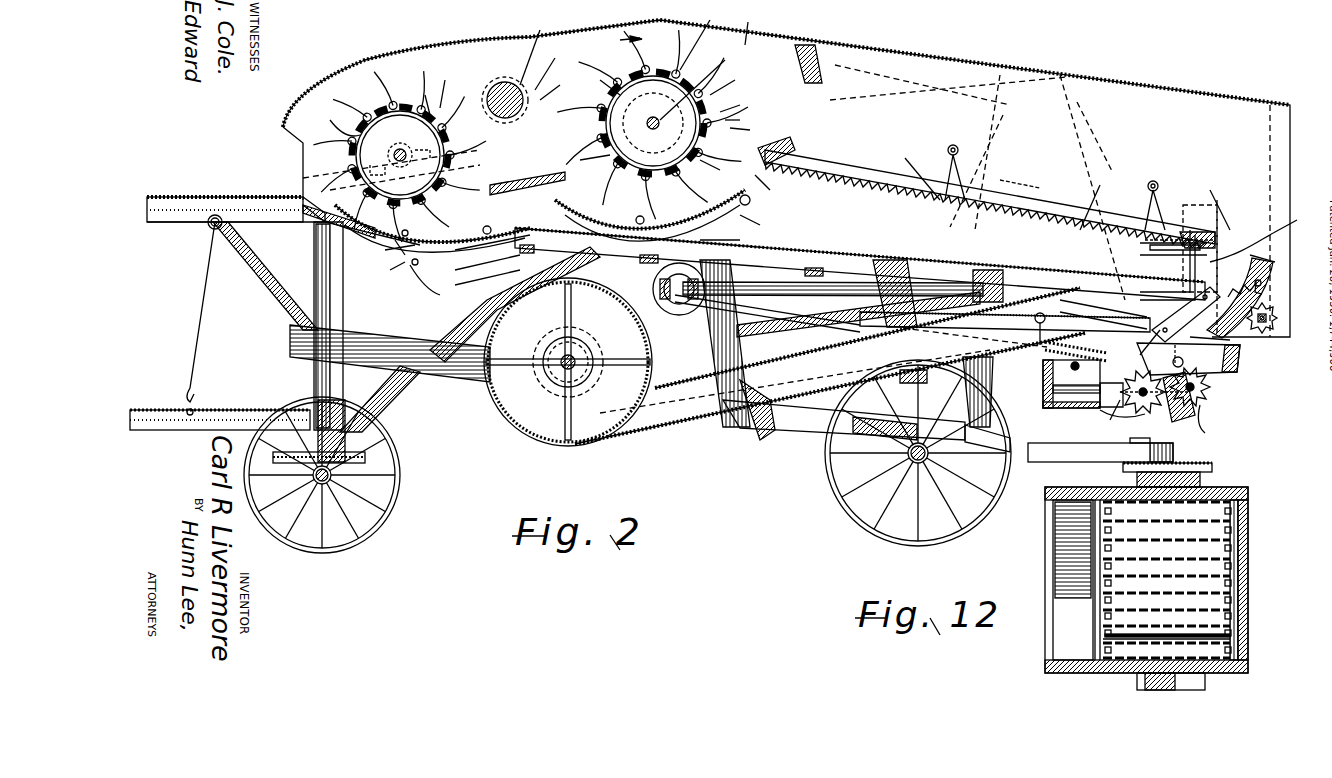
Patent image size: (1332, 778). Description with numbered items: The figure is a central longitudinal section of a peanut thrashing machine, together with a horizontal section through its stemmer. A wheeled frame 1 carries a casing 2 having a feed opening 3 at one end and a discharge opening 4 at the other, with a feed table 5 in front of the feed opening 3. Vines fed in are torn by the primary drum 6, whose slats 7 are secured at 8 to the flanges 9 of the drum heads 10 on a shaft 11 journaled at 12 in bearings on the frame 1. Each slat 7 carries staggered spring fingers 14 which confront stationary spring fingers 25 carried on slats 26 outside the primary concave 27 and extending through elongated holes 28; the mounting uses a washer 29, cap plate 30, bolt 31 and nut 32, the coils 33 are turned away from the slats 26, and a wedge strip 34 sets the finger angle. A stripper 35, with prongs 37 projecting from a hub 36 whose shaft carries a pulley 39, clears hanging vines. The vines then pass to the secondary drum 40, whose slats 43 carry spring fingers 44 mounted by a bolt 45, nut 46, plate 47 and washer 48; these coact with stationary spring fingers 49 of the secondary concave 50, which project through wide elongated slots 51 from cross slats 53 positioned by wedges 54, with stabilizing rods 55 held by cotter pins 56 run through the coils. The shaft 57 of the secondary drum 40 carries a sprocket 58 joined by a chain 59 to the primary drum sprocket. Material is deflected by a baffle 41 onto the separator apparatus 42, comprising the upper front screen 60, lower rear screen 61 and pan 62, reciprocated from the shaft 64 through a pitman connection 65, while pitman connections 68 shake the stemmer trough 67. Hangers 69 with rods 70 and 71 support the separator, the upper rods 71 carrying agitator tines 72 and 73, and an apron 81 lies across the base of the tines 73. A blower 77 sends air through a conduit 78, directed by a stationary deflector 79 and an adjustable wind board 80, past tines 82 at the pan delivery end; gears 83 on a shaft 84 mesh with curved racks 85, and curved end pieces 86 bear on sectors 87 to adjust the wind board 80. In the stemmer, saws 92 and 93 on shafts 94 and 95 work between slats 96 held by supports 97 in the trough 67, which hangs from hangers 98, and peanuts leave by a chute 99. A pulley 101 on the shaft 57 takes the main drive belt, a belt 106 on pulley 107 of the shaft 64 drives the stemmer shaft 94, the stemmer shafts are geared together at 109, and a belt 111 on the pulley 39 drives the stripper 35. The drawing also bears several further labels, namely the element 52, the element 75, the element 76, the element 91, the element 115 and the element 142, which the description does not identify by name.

In FIG. 2, the wheeled frame 1 is at (384, 412).
In FIG. 2, the casing 2 is at (750, 25).
In FIG. 2, the feed opening 3 is at (296, 167).
In FIG. 2, the discharge opening 4 is at (1284, 197).
In FIG. 2, the feed table 5 is at (200, 196).
In FIG. 2, the primary drum 6 is at (382, 66).
In FIG. 2, the slats 7 is at (342, 116).
In FIG. 2, the slat securing points 8 is at (400, 163).
In FIG. 2, the flanges 9 is at (427, 94).
In FIG. 2, the drum heads 10 is at (451, 82).
In FIG. 2, the shaft 11 is at (399, 155).
In FIG. 2, the journal 12 is at (1262, 364).
In FIG. 2, the spring fingers 14 is at (339, 218).
In FIG. 2, the stationary spring fingers 25 is at (425, 275).
In FIG. 2, the slats 26 is at (384, 268).
In FIG. 2, the primary concave 27 is at (310, 225).
In FIG. 2, the elongated holes 28 is at (492, 251).
In FIG. 2, the washer 29 is at (381, 284).
In FIG. 2, the cap plate 30 is at (432, 290).
In FIG. 2, the bolt 31 is at (305, 252).
In FIG. 2, the nut 32 is at (305, 238).
In FIG. 2, the coils 33 is at (420, 270).
In FIG. 2, the wedge strip 34 is at (379, 258).
In FIG. 2, the stripper 35 is at (536, 48).
In FIG. 2, the hub 36 is at (550, 65).
In FIG. 2, the prongs 37 is at (555, 83).
In FIG. 2, the pulley 39 is at (522, 108).
In FIG. 2, the secondary drum 40 is at (664, 53).
In FIG. 2, the baffle 41 is at (815, 45).
In FIG. 2, the separator apparatus 42 is at (902, 152).
In FIG. 2, the slats 43 is at (701, 82).
In FIG. 2, the spring fingers 44 is at (754, 127).
In FIG. 2, the bolt 45 is at (741, 101).
In FIG. 2, the nut 46 is at (742, 117).
In FIG. 2, the plate 47 is at (751, 128).
In FIG. 2, the washer 48 is at (643, 159).
In FIG. 2, the stationary spring fingers 49 is at (773, 191).
In FIG. 2, the secondary concave 50 is at (780, 145).
In FIG. 2, the elongated slots 51 is at (546, 180).
In FIG. 2, the bracket 52 is at (638, 225).
In FIG. 2, the cross slats 53 is at (650, 215).
In FIG. 2, the wedges 54 is at (723, 248).
In FIG. 2, the stabilizing rods 55 is at (708, 238).
In FIG. 2, the cotter pins 56 is at (688, 247).
In FIG. 2, the shaft 57 is at (701, 37).
In FIG. 2, the sprocket 58 is at (602, 79).
In FIG. 2, the chain 59 is at (616, 42).
In FIG. 2, the upper front separator screen 60 is at (922, 169).
In FIG. 2, the lower rear separator screen 61 is at (1101, 197).
In FIG. 2, the pan 62 is at (860, 264).
In FIG. 2, the shaft 64 is at (670, 315).
In FIG. 2, the pitman connection 65 is at (805, 300).
In FIG. 2, the stemmer trough 67 is at (1225, 372).
In FIG. 12, the stemmer trough 67 is at (1240, 560).
In FIG. 2, the pitman connections 68 is at (790, 305).
In FIG. 2, the hangers 69 is at (1150, 190).
In FIG. 2, the rods 70 is at (487, 268).
In FIG. 2, the rods 71 is at (1071, 189).
In FIG. 2, the tines 72 is at (1026, 173).
In FIG. 2, the tines 73 is at (1200, 250).
In FIG. 2, the conveyor belt 75 is at (960, 200).
In FIG. 2, the slat 76 is at (1160, 243).
In FIG. 2, the blower 77 is at (582, 443).
In FIG. 2, the conduit 78 is at (785, 405).
In FIG. 2, the stationary deflector 79 is at (1180, 321).
In FIG. 2, the adjustable wind board 80 is at (1268, 270).
In FIG. 2, the apron 81 is at (1170, 240).
In FIG. 2, the tines 82 is at (1103, 314).
In FIG. 2, the gears 83 is at (1278, 318).
In FIG. 2, the shaft 84 is at (1275, 330).
In FIG. 2, the racks 85 is at (1255, 295).
In FIG. 2, the end pieces 86 is at (1262, 258).
In FIG. 2, the sectors 87 is at (1264, 236).
In FIG. 2, the pin 91 is at (1260, 282).
In FIG. 12, the saws 92 is at (1103, 635).
In FIG. 2, the saws 93 is at (1212, 424).
In FIG. 12, the saws 93 is at (1235, 635).
In FIG. 2, the shaft 94 is at (1109, 418).
In FIG. 2, the shaft 95 is at (1200, 405).
In FIG. 2, the slats 96 is at (1150, 378).
In FIG. 12, the slats 96 is at (1230, 525).
In FIG. 2, the supports 97 is at (1111, 418).
In FIG. 12, the supports 97 is at (1240, 595).
In FIG. 2, the hangers 98 is at (1235, 340).
In FIG. 2, the chute 99 is at (1078, 400).
In FIG. 12, the chute 99 is at (1060, 552).
In FIG. 2, the pulley 101 is at (400, 238).
In FIG. 12, the belt 106 is at (1050, 455).
In FIG. 2, the pulley 107 is at (712, 312).
In FIG. 12, the gearing 109 is at (1212, 467).
In FIG. 2, the belt 111 is at (487, 282).
In FIG. 2, the shaft 115 is at (1233, 204).
In FIG. 2, the axle 142 is at (560, 358).